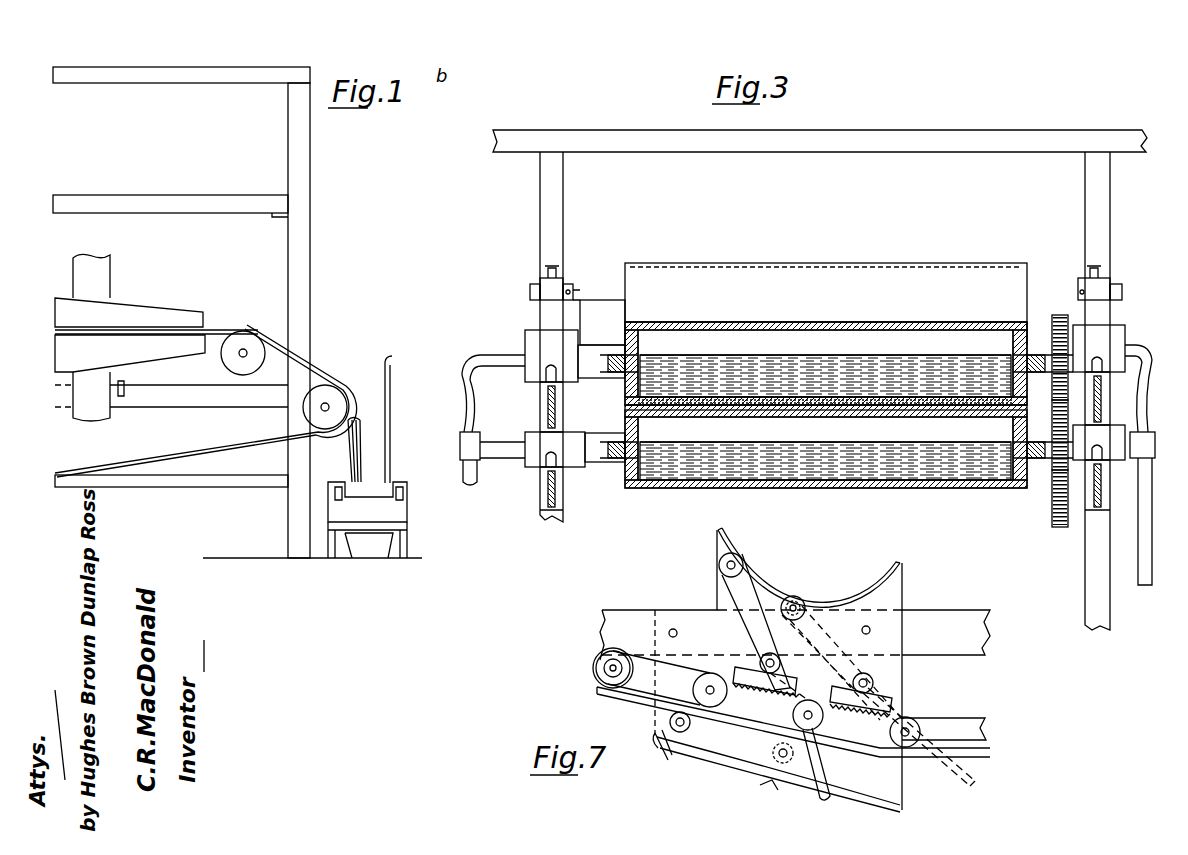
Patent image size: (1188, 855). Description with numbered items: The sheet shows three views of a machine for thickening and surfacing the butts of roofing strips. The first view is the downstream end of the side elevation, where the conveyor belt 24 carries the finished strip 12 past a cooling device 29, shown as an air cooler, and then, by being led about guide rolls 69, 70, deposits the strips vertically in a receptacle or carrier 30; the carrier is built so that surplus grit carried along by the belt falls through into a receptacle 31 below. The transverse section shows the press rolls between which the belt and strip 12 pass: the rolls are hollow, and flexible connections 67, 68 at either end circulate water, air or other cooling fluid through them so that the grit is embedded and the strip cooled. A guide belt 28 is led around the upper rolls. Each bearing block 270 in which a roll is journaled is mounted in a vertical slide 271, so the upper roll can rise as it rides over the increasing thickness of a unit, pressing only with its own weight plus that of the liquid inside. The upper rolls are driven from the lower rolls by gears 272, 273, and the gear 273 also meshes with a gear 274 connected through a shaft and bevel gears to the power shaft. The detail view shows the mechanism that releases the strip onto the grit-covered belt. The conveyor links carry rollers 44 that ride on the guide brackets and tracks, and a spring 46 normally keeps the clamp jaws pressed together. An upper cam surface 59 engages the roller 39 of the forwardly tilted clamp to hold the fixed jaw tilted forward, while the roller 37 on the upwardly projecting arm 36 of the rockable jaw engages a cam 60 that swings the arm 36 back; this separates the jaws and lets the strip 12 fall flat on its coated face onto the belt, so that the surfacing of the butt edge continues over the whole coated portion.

In FIG. 3, the strip 12 is at (773, 410).
In FIG. 3, the conveyor belt 24 is at (878, 408).
In FIG. 3, the guide belt 28 is at (735, 250).
In FIG. 1B, the cooling device 29 is at (145, 300).
In FIG. 1B, the receptacle or carrier 30 is at (389, 410).
In FIG. 1B, the receptacle or hopper 31 is at (365, 548).
In FIG. 7, the extension 36 is at (735, 585).
In FIG. 7, the roller 37 is at (719, 552).
In FIG. 7, the roller 39 is at (670, 722).
In FIG. 7, the roller 44 is at (618, 648).
In FIG. 7, the spring 46 is at (765, 702).
In FIG. 7, the upper cam surface 59 is at (714, 752).
In FIG. 7, the cam 60 is at (778, 580).
In FIG. 3, the flexible connection 67 is at (476, 410).
In FIG. 3, the flexible connection 68 is at (1146, 408).
In FIG. 1B, the guide roll 69 is at (232, 360).
In FIG. 1B, the guide roll 70 is at (328, 398).
In FIG. 3, the bearing block 270 is at (530, 330).
In FIG. 3, the vertical slide 271 is at (527, 345).
In FIG. 3, the gear 272 is at (1058, 315).
In FIG. 3, the gear 273 is at (1052, 488).
In FIG. 3, the gear 274 is at (1058, 527).